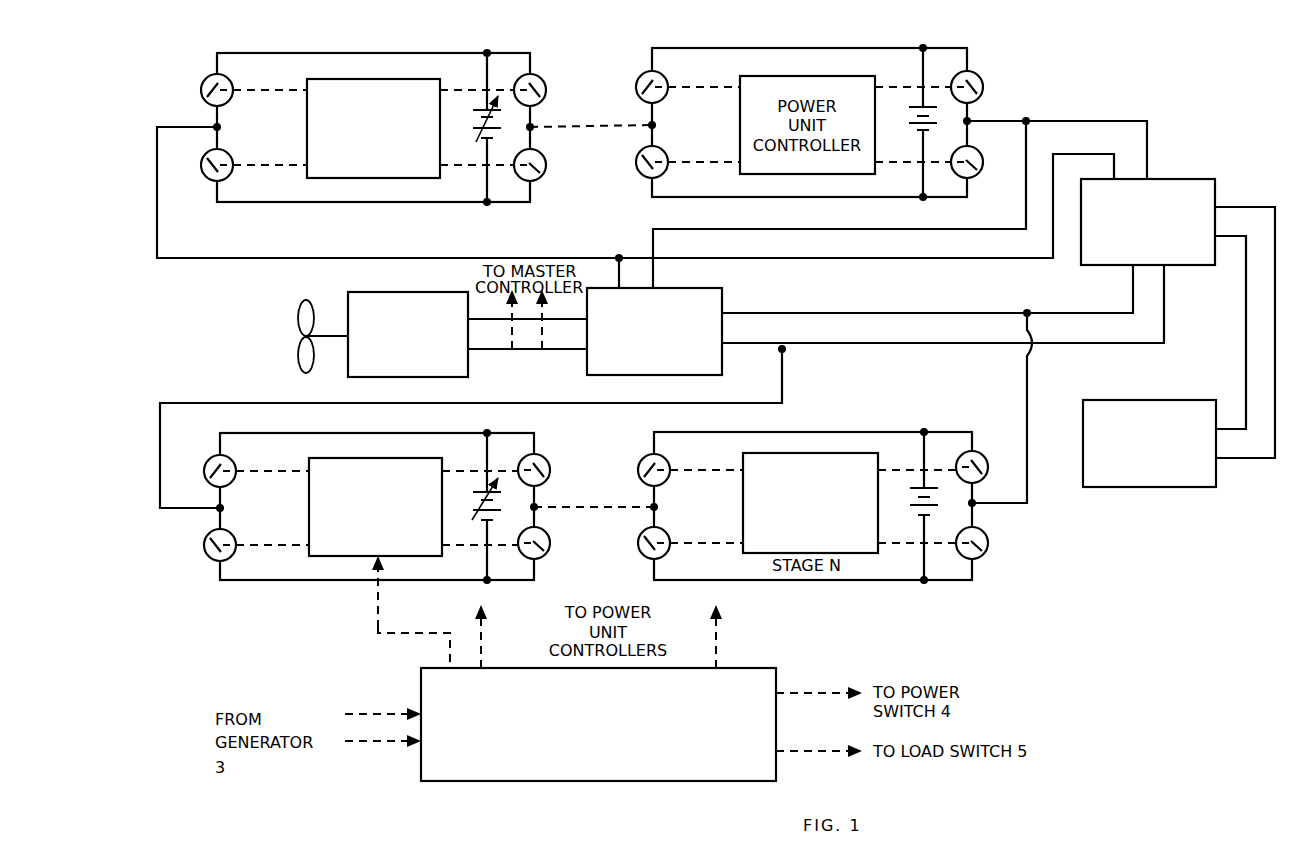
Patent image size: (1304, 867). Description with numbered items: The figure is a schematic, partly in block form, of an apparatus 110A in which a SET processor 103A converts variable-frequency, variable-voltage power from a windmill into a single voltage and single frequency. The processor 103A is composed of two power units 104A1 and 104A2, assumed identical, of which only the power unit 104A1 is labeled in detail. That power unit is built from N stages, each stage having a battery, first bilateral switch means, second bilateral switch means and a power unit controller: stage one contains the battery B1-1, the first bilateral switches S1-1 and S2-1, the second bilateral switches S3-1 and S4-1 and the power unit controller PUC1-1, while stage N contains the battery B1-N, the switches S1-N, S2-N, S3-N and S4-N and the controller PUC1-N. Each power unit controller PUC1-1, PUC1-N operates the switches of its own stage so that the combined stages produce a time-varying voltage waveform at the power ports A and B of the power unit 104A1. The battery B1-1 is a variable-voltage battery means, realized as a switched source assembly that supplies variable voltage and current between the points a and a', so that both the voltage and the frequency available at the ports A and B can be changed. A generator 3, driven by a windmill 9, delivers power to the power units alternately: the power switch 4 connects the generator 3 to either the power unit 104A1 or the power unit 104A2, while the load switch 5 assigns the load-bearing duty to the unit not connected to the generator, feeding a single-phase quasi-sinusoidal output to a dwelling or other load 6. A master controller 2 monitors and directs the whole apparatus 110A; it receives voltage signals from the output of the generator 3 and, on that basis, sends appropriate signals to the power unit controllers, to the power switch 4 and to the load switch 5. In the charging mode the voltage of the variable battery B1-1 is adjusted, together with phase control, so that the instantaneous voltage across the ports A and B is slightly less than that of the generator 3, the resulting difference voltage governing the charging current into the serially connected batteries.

The master controller 2 is at (630, 783).
The generator 3 is at (348, 303).
The power switch 4 is at (723, 303).
The load switch 5 is at (1186, 178).
The load 6 is at (1185, 488).
The windmill 9 is at (300, 316).
The SET processor 103A is at (187, 320).
The power unit 104A1 is at (290, 598).
The power unit 104A2 is at (330, 203).
The apparatus 110A is at (370, 785).
The power port A is at (218, 510).
The power port B is at (975, 505).
The point a is at (494, 420).
The point a' is at (473, 591).
The variable-voltage battery means B1-1 is at (498, 490).
The battery B1-N is at (926, 489).
The first bilateral switch means S1-1 is at (236, 468).
The first bilateral switch means S2-1 is at (204, 546).
The second bilateral switch means S3-1 is at (545, 466).
The second bilateral switch means S4-1 is at (545, 552).
The first bilateral switch means S1-N is at (670, 468).
The first bilateral switch means S2-N is at (668, 551).
The second bilateral switch means S3-N is at (1000, 460).
The second bilateral switch means S4-N is at (983, 552).
The power unit controller means PUC1-1 is at (402, 458).
The power unit controller means PUC1-N is at (815, 453).